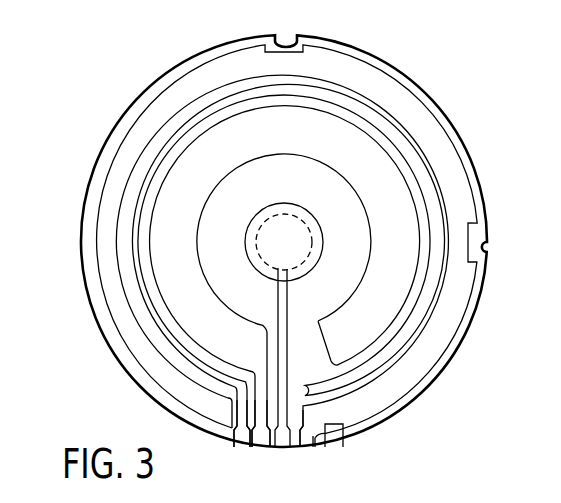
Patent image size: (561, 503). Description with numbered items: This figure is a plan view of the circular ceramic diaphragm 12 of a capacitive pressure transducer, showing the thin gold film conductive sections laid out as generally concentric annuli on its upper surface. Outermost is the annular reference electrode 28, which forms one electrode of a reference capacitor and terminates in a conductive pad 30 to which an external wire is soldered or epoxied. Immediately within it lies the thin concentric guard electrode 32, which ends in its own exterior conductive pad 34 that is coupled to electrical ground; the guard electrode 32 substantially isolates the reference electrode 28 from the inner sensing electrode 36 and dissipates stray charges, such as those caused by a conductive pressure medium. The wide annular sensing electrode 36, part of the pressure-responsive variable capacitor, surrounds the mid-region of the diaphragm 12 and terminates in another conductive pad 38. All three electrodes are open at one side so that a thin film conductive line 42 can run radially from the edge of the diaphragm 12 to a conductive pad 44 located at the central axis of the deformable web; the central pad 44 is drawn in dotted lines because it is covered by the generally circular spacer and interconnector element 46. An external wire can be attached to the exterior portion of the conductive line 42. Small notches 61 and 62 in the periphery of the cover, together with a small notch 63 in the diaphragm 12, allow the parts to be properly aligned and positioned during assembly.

The diaphragm 12 is at (440, 104).
The reference electrode 28 is at (363, 75).
The conductive pad 30 is at (303, 445).
The guard electrode 32 is at (428, 186).
The conductive pad 34 is at (241, 440).
The sensing electrode 36 is at (400, 290).
The conductive pad 38 is at (262, 444).
The conductive line 42 is at (283, 386).
The conductive pad 44 is at (291, 213).
The spacer and interconnector element 46 is at (323, 245).
The notch 61 is at (287, 40).
The notch 62 is at (493, 247).
The notch 63 is at (513, 464).